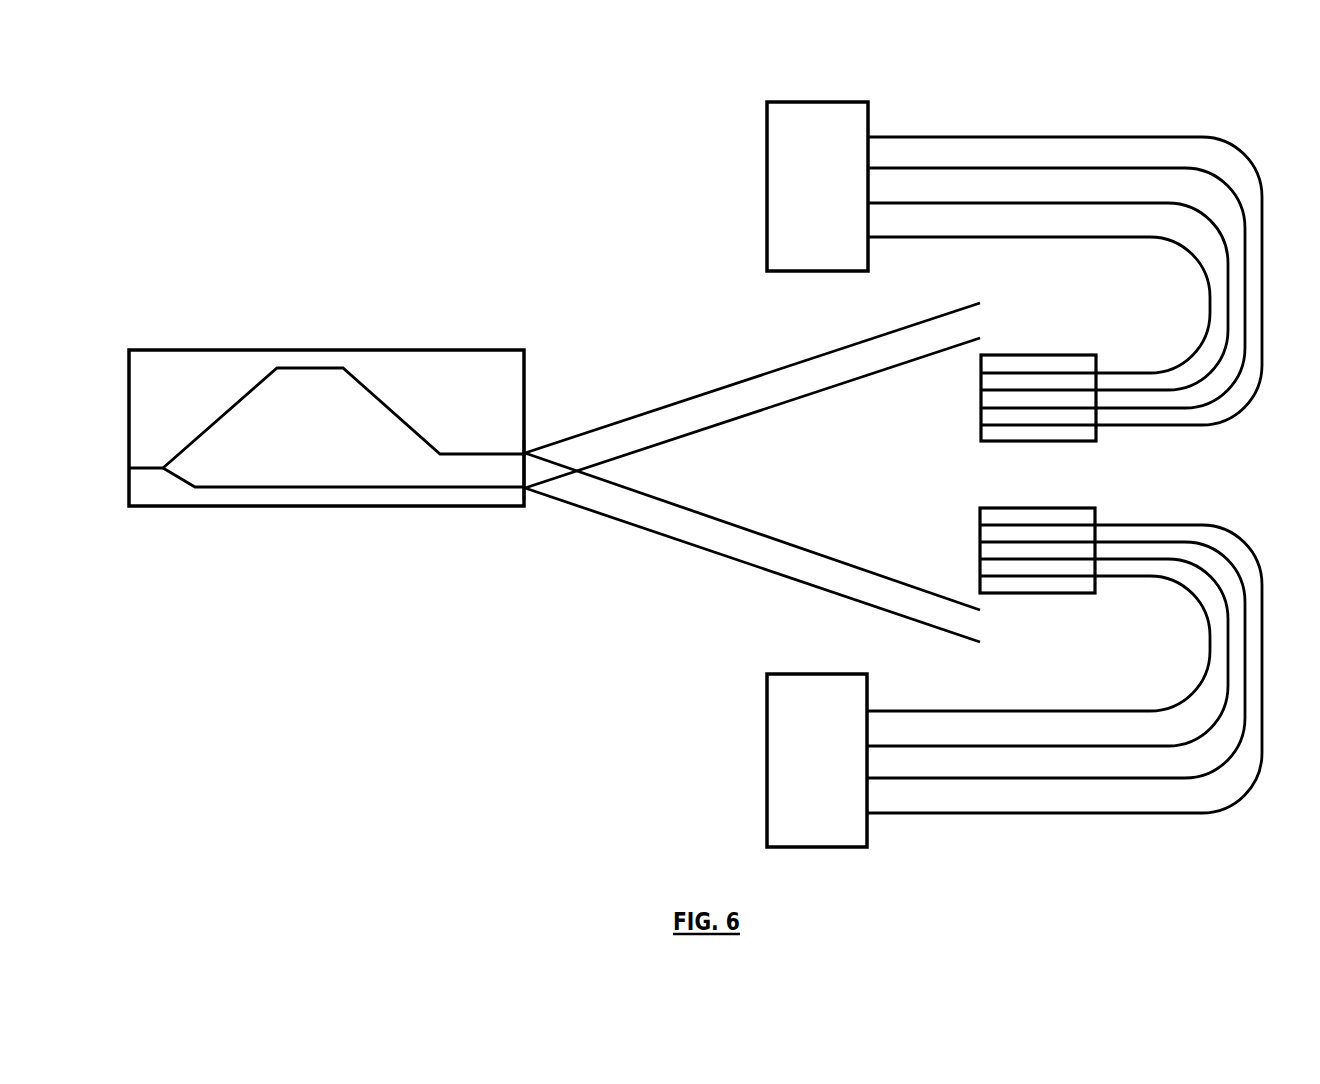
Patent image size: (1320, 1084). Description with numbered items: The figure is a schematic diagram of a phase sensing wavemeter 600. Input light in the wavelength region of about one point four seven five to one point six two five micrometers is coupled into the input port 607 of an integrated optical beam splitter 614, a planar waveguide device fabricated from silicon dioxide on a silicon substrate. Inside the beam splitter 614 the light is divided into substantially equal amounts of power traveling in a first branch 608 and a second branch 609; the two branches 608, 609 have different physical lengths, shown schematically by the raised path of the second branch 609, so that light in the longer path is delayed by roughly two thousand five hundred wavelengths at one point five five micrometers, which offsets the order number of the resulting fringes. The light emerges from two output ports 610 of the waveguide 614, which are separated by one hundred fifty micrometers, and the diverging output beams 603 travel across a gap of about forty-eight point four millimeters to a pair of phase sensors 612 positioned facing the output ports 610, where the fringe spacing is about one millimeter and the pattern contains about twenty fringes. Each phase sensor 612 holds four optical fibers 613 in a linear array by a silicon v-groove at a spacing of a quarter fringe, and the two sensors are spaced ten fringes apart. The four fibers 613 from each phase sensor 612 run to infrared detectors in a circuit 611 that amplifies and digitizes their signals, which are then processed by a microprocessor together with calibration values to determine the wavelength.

The phase sensing wavemeter 600 is at (695, 460).
The optical beams 603 is at (752, 472).
The input port 607 is at (188, 510).
The first branch 608 is at (343, 461).
The second branch 609 is at (343, 386).
The output ports 610 is at (608, 420).
The circuit 611 is at (745, 474).
The phase sensors 612 is at (1095, 474).
The optical fibers 613 is at (1064, 443).
The integrated optical beam splitter 614 is at (326, 470).